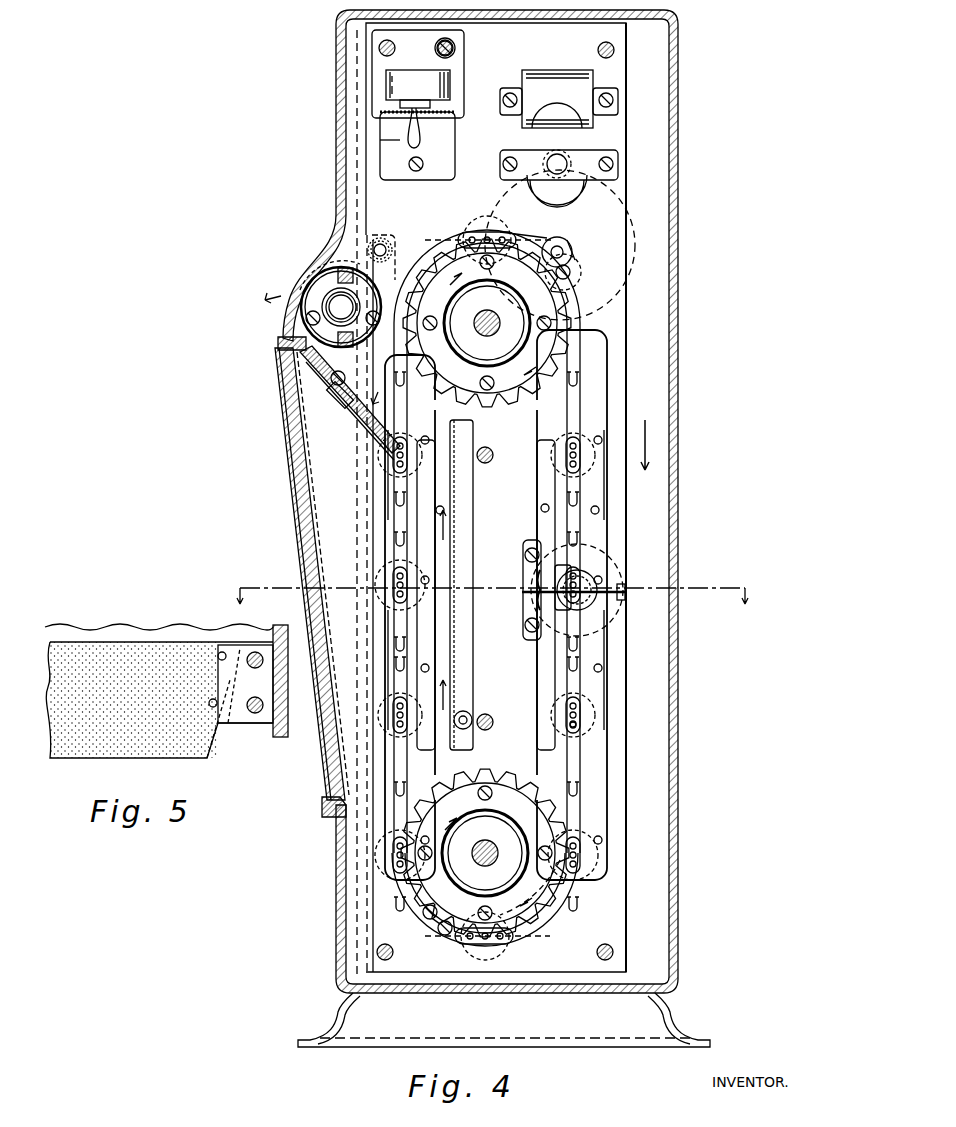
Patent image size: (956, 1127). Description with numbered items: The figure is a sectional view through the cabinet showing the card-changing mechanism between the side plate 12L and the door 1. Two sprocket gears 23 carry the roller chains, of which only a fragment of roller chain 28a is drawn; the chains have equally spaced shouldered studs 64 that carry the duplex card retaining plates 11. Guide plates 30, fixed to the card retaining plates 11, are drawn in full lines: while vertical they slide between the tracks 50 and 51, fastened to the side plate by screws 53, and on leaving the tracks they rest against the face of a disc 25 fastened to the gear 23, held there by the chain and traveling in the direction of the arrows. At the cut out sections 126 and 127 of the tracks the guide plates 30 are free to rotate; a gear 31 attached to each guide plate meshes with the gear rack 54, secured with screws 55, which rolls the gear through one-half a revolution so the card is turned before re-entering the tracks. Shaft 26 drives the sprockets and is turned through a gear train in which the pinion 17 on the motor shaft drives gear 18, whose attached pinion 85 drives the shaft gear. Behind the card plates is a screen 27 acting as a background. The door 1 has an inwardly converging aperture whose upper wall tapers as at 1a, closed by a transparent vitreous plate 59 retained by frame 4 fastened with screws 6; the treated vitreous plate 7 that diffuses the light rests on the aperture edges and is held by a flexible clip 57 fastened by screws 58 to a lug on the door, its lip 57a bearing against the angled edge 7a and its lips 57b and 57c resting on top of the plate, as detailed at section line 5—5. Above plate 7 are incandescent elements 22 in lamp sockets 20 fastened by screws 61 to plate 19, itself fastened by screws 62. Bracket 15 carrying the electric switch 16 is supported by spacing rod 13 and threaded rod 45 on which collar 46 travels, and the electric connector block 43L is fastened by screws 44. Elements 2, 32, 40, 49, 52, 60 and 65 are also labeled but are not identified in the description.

In FIG. 4, the door 1 is at (336, 92).
In FIG. 5, the door 1 is at (270, 640).
In FIG. 4, the tapered upper wall of aperture 1a is at (372, 770).
In FIG. 5, the tapered upper wall of aperture 1a is at (195, 720).
In FIG. 4, the casing wall 2 is at (678, 90).
In FIG. 4, the frame 4 is at (278, 342).
In FIG. 4, the section line 5— 5 is at (319, 348).
In FIG. 4, the screw 6 is at (300, 845).
In FIG. 4, the treated vitreous plate 7 is at (330, 380).
In FIG. 5, the treated vitreous plate 7 is at (218, 755).
In FIG. 5, the angled end edge of plate 7a is at (212, 758).
In FIG. 4, the duplex card retaining plate 11 is at (394, 548).
In FIG. 4, the side plate 12L is at (625, 155).
In FIG. 4, the spacing rod 13 is at (378, 48).
In FIG. 4, the bracket 15 is at (462, 90).
In FIG. 4, the electric switch 16 is at (428, 146).
In FIG. 4, the pinion 17 is at (565, 170).
In FIG. 4, the gear 18 is at (572, 245).
In FIG. 4, the plate 19 is at (360, 260).
In FIG. 4, the incandescent lamp socket 20 is at (330, 290).
In FIG. 4, the incandescent element 22 is at (340, 300).
In FIG. 4, the sprocket gear 23 is at (500, 408).
In FIG. 4, the disc 25 is at (430, 250).
In FIG. 4, the shaft 26 is at (487, 336).
In FIG. 4, the screen 27 is at (465, 586).
In FIG. 4, the roller chain 28a is at (428, 905).
In FIG. 4, the guide plate 30 is at (393, 605).
In FIG. 4, the gear 31 is at (555, 640).
In FIG. 4, the roller pin 32 is at (590, 718).
In FIG. 4, the back plate 40 is at (630, 28).
In FIG. 4, the electric connector block 43L is at (380, 155).
In FIG. 4, the screw 44 is at (408, 162).
In FIG. 4, the threaded rod 45 is at (455, 46).
In FIG. 4, the spacing collar 46 is at (455, 52).
In FIG. 4, the sprocket screw 49 is at (496, 384).
In FIG. 4, the track 50 is at (607, 370).
In FIG. 4, the track 51 is at (438, 430).
In FIG. 4, the guide hole 52 is at (600, 510).
In FIG. 4, the screw 53 is at (541, 511).
In FIG. 4, the gear rack 54 is at (525, 610).
In FIG. 4, the screw 55 is at (530, 626).
In FIG. 4, the clip 57 is at (335, 392).
In FIG. 5, the clip 57 is at (236, 725).
In FIG. 5, the lip 57a is at (226, 690).
In FIG. 5, the lip 57b is at (236, 660).
In FIG. 5, the lip 57c is at (210, 700).
In FIG. 4, the screw 58 is at (338, 390).
In FIG. 5, the screw 58 is at (258, 712).
In FIG. 4, the transparent vitreous plate 59 is at (308, 520).
In FIG. 4, the gear ring 60 is at (333, 275).
In FIG. 4, the screw 61 is at (330, 305).
In FIG. 4, the screw 62 is at (386, 245).
In FIG. 4, the stud 64 is at (579, 722).
In FIG. 4, the roller 65 is at (466, 712).
In FIG. 4, the pinion 85 is at (580, 262).
In FIG. 4, the cut out section of track 126 is at (595, 570).
In FIG. 4, the cut out section of track 127 is at (585, 598).